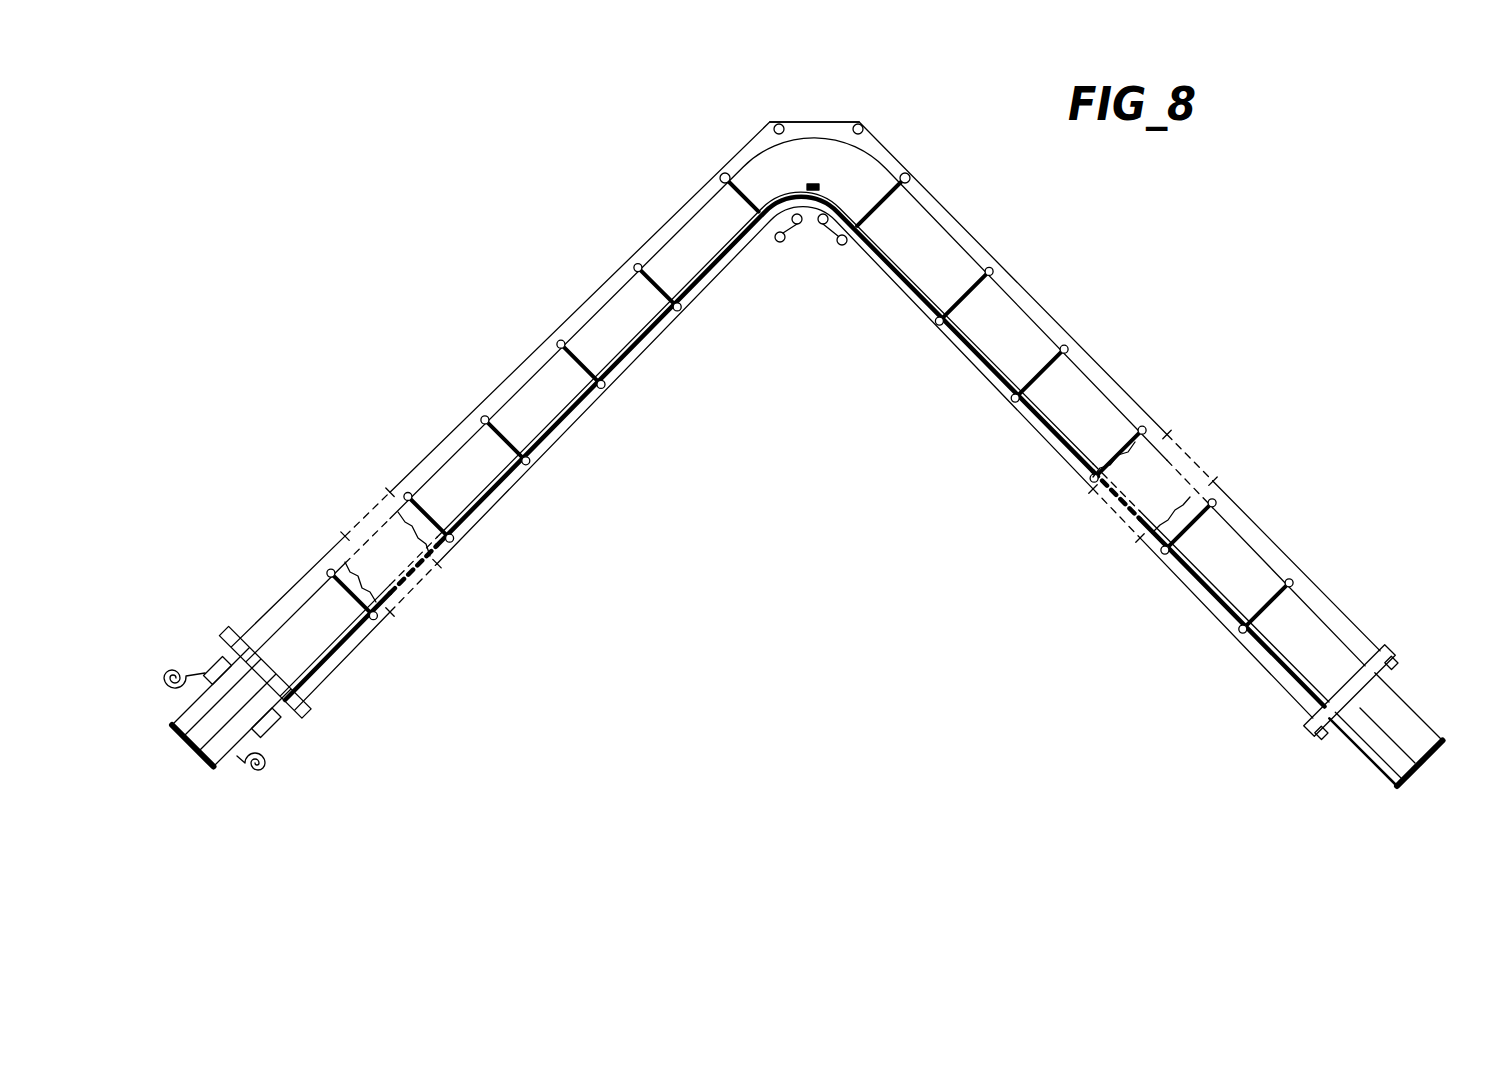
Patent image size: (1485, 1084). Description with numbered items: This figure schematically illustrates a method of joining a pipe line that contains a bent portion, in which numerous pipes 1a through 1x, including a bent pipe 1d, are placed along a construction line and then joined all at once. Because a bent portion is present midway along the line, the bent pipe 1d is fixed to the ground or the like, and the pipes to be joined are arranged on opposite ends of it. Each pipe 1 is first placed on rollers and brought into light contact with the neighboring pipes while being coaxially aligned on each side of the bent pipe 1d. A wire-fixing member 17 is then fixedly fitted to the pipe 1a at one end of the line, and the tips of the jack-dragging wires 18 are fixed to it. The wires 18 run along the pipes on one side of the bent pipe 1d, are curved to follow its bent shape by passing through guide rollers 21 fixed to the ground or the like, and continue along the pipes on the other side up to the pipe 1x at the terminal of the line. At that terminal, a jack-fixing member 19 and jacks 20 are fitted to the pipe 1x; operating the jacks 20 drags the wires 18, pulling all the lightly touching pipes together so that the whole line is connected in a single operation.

The pipe 1 is at (679, 212).
The pipe 1a is at (1262, 674).
The bent pipe 1d is at (819, 134).
The pipe 1x is at (348, 638).
The wire-fixing member 17 is at (1389, 652).
The jack-dragging wires 18 is at (904, 164).
The jack-fixing member 19 is at (312, 712).
The jacks 20 is at (214, 656).
The guide rollers 21 is at (726, 172).